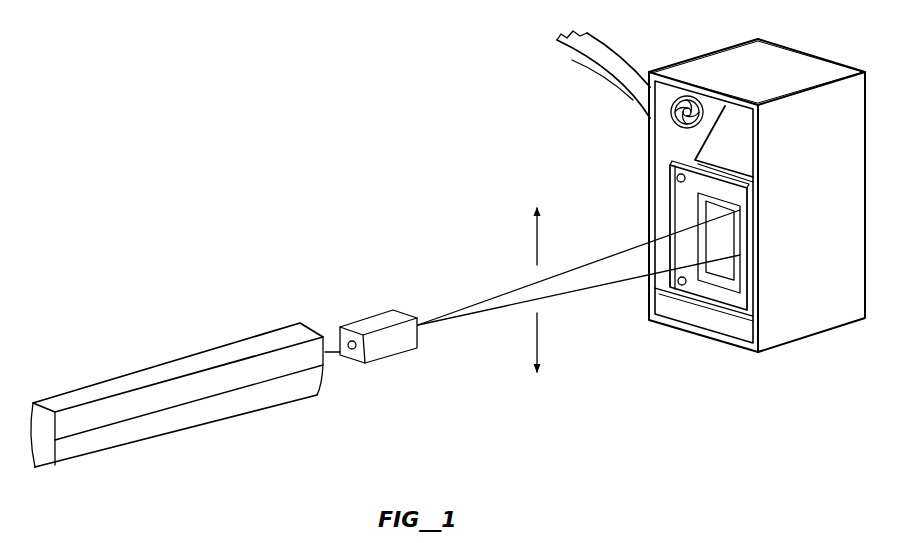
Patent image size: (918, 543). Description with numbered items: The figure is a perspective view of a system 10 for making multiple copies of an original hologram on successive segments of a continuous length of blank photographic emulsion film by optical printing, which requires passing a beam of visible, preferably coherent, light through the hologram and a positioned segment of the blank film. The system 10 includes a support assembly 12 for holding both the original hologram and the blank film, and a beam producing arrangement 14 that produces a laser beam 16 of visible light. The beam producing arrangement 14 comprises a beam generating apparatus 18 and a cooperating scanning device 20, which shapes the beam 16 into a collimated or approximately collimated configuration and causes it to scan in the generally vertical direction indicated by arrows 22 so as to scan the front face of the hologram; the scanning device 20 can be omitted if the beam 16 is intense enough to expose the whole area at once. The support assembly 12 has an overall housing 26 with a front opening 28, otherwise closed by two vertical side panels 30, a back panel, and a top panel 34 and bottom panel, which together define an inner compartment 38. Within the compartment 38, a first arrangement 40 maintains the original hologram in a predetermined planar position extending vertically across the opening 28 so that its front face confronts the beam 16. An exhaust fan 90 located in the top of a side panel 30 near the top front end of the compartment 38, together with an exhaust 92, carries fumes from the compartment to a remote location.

The system 10 is at (296, 105).
The support assembly 12 is at (758, 364).
The beam producing arrangement 14 is at (232, 320).
The laser beam 16 is at (572, 293).
The beam generating apparatus 18 is at (200, 428).
The scanning device 20 is at (396, 358).
The arrows 22 is at (537, 247).
The housing 26 is at (824, 53).
The front opening 28 is at (750, 147).
The vertical side panels 30 is at (648, 190).
The top panel 34 is at (708, 70).
The inner compartment 38 is at (660, 223).
The first arrangement 40 is at (719, 280).
The exhaust fan 90 is at (673, 121).
The exhaust 92 is at (572, 62).